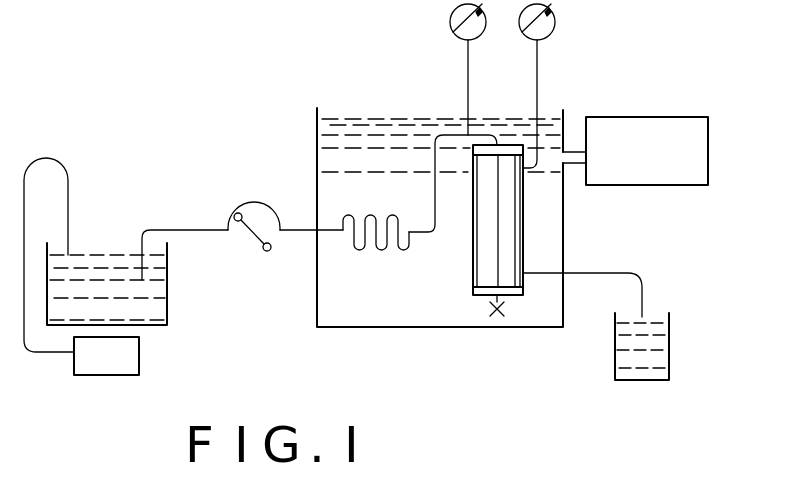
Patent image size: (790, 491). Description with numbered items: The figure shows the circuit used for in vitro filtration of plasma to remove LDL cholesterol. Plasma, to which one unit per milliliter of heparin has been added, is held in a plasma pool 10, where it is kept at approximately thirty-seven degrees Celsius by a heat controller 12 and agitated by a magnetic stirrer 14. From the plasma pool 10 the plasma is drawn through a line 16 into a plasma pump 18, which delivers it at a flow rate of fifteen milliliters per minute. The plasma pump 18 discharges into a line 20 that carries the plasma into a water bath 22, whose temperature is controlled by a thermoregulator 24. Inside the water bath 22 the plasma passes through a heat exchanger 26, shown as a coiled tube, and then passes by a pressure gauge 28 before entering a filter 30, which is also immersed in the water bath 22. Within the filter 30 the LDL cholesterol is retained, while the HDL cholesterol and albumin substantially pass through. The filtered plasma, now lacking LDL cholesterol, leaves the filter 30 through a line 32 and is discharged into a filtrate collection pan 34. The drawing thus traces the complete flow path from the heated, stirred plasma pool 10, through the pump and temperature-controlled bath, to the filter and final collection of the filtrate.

The plasma pool 10 is at (97, 253).
The heat controller 12 is at (139, 355).
The magnetic stirrer 14 is at (155, 293).
The line 16 is at (157, 228).
The plasma pump 18 is at (235, 214).
The line 20 is at (302, 227).
The water bath 22 is at (563, 232).
The thermoregulator 24 is at (619, 116).
The heat exchanger 26 is at (365, 250).
The pressure gauge 28 is at (450, 17).
The filter 30 is at (473, 248).
The line 32 is at (630, 272).
The filtrate collection pan 34 is at (669, 353).